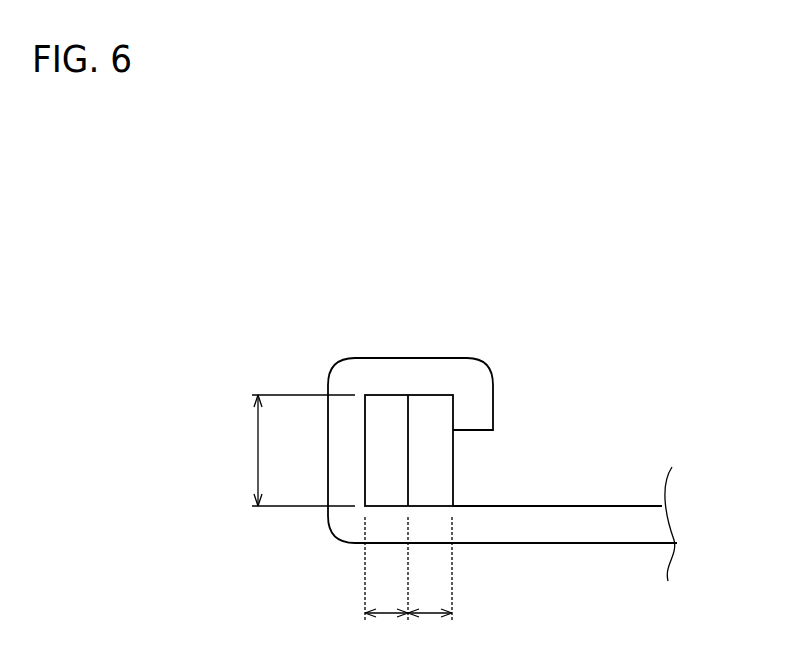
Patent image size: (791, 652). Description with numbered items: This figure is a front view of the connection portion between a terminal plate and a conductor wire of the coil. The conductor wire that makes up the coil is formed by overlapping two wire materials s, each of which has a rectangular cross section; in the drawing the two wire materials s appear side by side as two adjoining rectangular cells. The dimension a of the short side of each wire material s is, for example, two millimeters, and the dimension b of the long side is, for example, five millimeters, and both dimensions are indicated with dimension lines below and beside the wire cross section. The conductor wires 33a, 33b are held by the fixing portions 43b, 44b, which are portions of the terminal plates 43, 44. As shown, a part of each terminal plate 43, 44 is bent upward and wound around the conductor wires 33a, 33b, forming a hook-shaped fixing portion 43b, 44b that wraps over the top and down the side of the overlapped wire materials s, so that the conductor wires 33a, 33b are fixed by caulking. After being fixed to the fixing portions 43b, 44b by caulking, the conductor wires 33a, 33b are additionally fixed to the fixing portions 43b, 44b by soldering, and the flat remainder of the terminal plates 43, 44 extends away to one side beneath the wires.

The fixing portion 43b is at (370, 392).
The fixing portion 44b is at (324, 357).
The conductor wire 33a is at (500, 450).
The conductor wire 33b is at (455, 472).
The terminal plate 43 is at (502, 547).
The terminal plate 44 is at (563, 543).
The wire material s is at (391, 404).
The dimension of short side a is at (408, 579).
The dimension of long side b is at (295, 450).